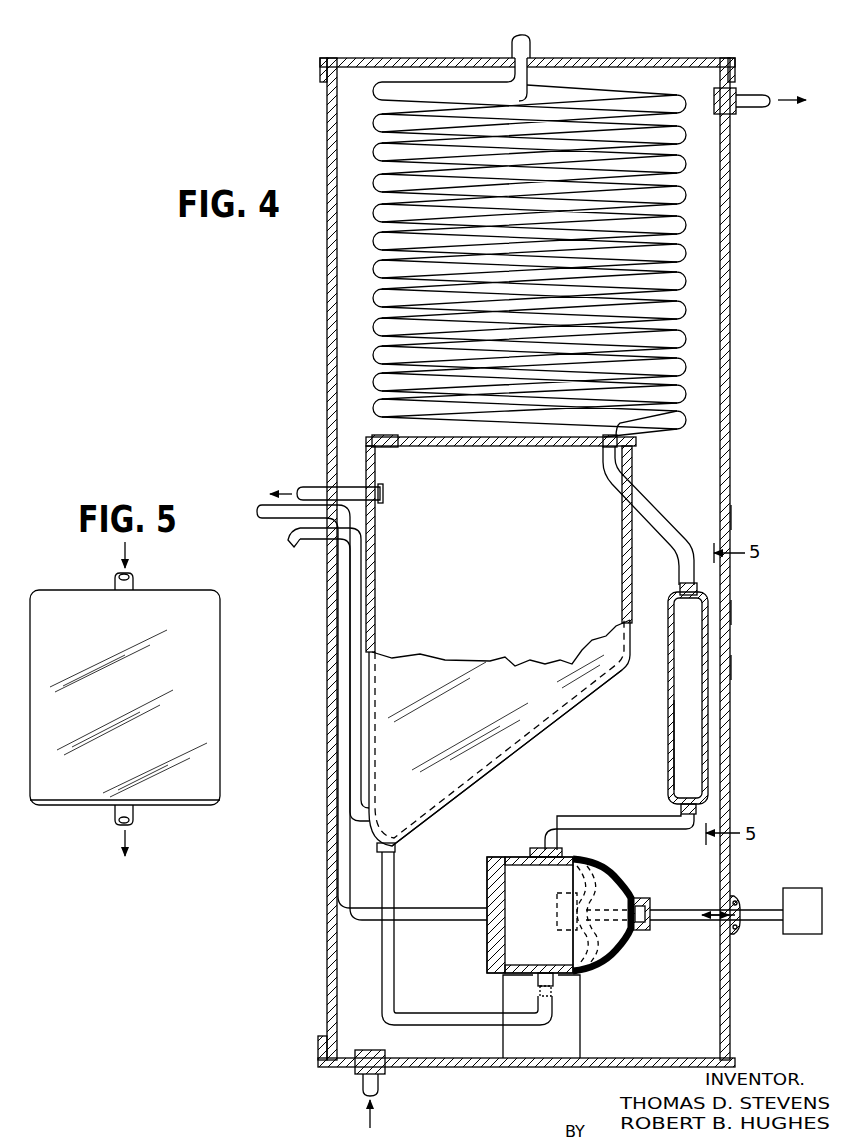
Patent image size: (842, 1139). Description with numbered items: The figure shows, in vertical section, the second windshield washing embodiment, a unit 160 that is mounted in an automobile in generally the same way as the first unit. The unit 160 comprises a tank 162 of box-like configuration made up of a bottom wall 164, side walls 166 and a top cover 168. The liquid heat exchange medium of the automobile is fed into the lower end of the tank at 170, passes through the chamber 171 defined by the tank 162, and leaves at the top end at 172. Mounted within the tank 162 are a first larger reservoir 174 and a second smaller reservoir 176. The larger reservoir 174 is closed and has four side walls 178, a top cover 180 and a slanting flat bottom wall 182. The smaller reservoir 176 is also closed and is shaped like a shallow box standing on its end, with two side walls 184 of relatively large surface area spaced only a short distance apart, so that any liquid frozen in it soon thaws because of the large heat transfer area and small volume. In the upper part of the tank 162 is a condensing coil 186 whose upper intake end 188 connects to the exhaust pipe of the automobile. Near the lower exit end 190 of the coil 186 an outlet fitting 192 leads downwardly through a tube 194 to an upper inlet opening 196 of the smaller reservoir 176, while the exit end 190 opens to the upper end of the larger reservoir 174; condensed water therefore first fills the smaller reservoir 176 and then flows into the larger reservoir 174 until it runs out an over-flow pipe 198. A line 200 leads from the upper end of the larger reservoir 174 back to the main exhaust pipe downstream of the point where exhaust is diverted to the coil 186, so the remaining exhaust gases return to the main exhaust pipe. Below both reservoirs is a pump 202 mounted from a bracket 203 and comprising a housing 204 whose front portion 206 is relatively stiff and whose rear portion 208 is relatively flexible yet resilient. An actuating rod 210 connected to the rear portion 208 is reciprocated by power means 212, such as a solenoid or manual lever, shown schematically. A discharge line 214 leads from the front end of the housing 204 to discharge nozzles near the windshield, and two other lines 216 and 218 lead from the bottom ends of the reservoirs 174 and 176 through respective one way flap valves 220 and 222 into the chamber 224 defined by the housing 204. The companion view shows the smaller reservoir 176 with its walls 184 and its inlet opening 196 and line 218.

In FIG. 4, the unit 160 is at (748, 612).
In FIG. 4, the tank 162 is at (735, 668).
In FIG. 4, the bottom wall 164 is at (640, 1062).
In FIG. 4, the side walls 166 is at (700, 499).
In FIG. 4, the top cover 168 is at (418, 66).
In FIG. 4, the lower tank inlet 170 is at (358, 1093).
In FIG. 4, the chamber 171 is at (731, 515).
In FIG. 4, the upper tank outlet 172 is at (752, 95).
In FIG. 4, the first larger reservoir 174 is at (585, 704).
In FIG. 5, the first larger reservoir 174 is at (95, 807).
In FIG. 4, the second smaller reservoir 176 is at (667, 762).
In FIG. 4, the side walls 178 is at (510, 608).
In FIG. 4, the top cover 180 is at (510, 448).
In FIG. 4, the slanting flat bottom wall 182 is at (512, 760).
In FIG. 4, the side walls 184 is at (705, 716).
In FIG. 5, the side walls 184 is at (200, 729).
In FIG. 4, the condensing coil 186 is at (670, 226).
In FIG. 4, the upper intake end 188 is at (512, 80).
In FIG. 4, the lower exit end 190 is at (396, 448).
In FIG. 4, the outlet fitting 192 is at (640, 430).
In FIG. 4, the tube 194 is at (690, 540).
In FIG. 4, the upper inlet opening 196 is at (695, 588).
In FIG. 5, the upper inlet opening 196 is at (132, 586).
In FIG. 4, the over-flow pipe 198 is at (292, 548).
In FIG. 4, the line 200 is at (314, 490).
In FIG. 4, the pump 202 is at (632, 860).
In FIG. 4, the bracket 203 is at (582, 1040).
In FIG. 4, the housing 204 is at (587, 975).
In FIG. 4, the front portion 206 is at (498, 848).
In FIG. 4, the rear portion 208 is at (620, 888).
In FIG. 4, the actuating rod 210 is at (678, 912).
In FIG. 4, the power means 212 is at (797, 887).
In FIG. 4, the discharge line 214 is at (258, 503).
In FIG. 4, the line 216 is at (405, 1000).
In FIG. 4, the line 218 is at (580, 824).
In FIG. 5, the line 218 is at (134, 814).
In FIG. 4, the one way flap valve 220 is at (525, 972).
In FIG. 4, the one way flap valve 222 is at (560, 868).
In FIG. 4, the chamber 224 is at (545, 911).